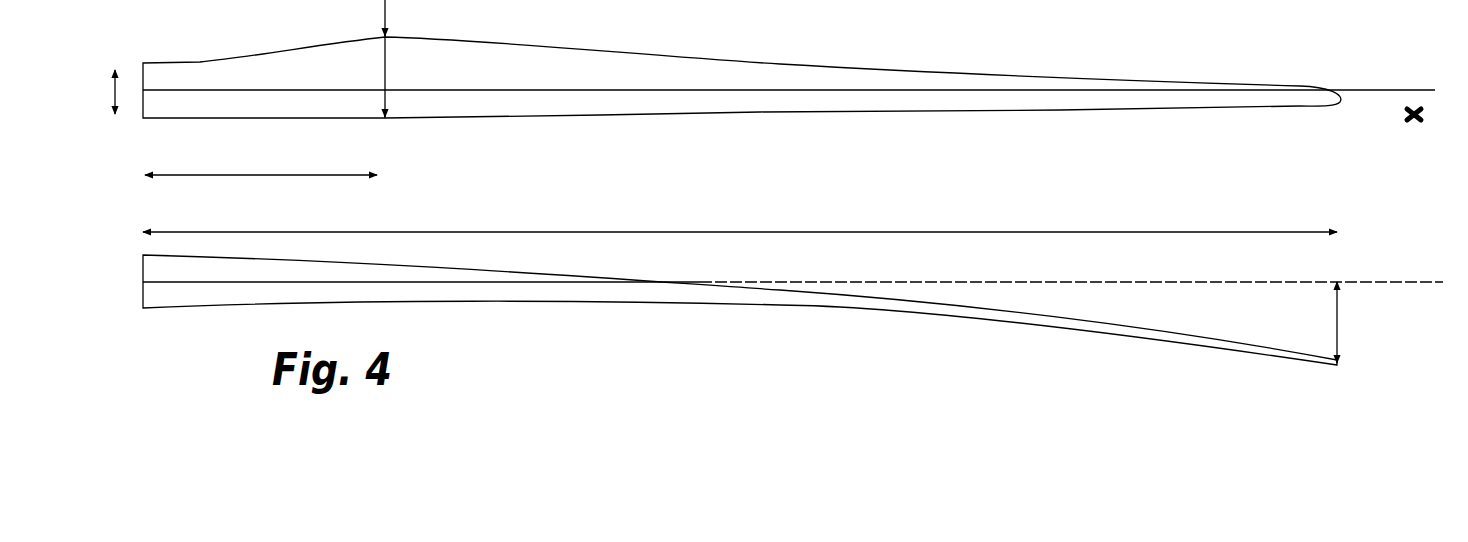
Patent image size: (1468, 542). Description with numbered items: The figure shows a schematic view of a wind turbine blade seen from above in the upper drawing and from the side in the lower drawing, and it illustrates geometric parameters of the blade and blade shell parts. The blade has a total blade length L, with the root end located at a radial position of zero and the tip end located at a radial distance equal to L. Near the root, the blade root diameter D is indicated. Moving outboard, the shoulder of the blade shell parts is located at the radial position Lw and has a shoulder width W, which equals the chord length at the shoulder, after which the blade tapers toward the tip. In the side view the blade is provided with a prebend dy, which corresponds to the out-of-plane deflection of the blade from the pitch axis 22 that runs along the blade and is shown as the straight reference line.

The pitch axis 22 is at (617, 90).
The shoulder width W is at (400, 59).
The blade root diameter D is at (104, 92).
The shoulder position Lw is at (261, 161).
The blade length L is at (740, 218).
The prebend dy is at (1355, 322).